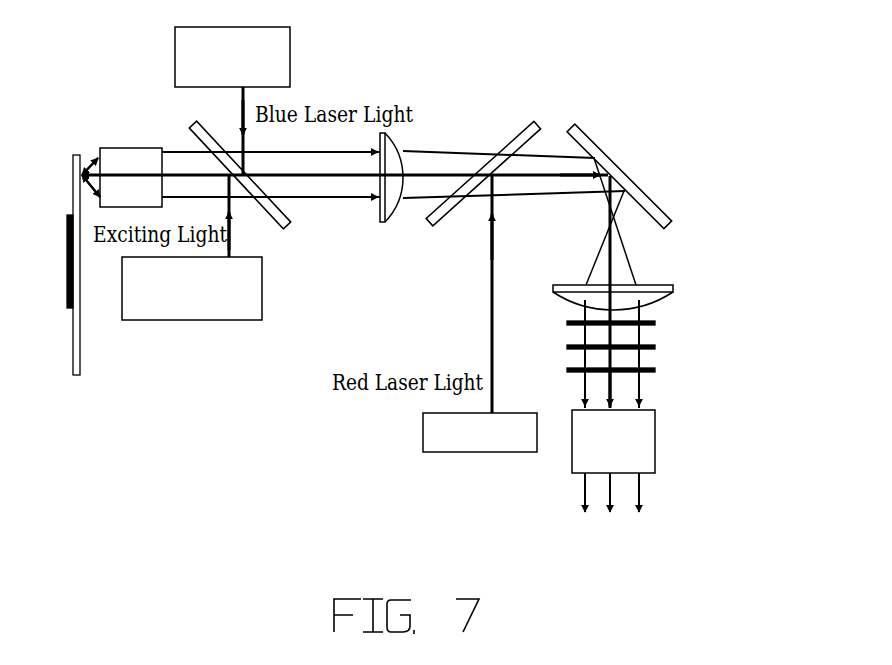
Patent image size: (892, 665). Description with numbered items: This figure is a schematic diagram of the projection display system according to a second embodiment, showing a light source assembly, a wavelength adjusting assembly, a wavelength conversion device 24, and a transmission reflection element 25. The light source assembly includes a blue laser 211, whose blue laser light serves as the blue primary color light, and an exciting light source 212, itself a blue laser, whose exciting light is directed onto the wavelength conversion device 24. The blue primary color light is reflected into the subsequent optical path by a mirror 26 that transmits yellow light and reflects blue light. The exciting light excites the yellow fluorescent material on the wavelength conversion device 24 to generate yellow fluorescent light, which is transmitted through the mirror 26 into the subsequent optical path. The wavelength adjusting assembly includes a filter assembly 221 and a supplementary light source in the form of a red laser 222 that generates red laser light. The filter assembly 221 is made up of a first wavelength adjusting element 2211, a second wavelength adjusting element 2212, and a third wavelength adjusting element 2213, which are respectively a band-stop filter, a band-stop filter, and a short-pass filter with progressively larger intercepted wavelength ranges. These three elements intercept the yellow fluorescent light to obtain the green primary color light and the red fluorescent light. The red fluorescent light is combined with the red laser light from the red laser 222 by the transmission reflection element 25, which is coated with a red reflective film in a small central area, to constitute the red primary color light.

The wavelength conversion device 24 is at (76, 375).
The transmission reflection element 25 is at (522, 122).
The mirror 26 is at (287, 231).
The blue laser 211 is at (290, 52).
The exciting light source 212 is at (235, 320).
The filter assembly 221 is at (686, 334).
The red laser 222 is at (483, 452).
The first wavelength adjusting element 2211 is at (657, 323).
The second wavelength adjusting element 2212 is at (655, 347).
The third wavelength adjusting element 2213 is at (666, 397).